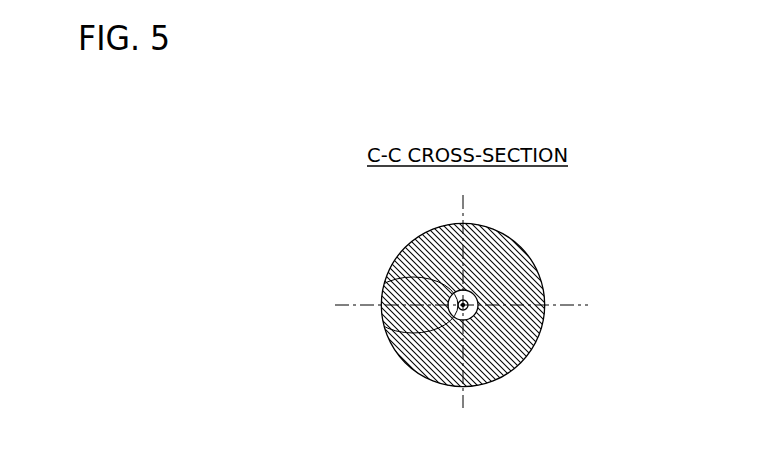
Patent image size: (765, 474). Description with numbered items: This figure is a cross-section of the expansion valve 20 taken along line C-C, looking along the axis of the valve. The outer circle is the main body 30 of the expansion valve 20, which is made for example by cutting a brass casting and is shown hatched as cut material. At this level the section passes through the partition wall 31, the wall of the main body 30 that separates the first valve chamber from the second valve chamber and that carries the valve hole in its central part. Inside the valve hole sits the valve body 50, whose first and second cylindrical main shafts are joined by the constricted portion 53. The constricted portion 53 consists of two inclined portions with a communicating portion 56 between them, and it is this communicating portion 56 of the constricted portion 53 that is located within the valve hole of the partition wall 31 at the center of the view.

The expansion valve 20 is at (463, 301).
The main body 30 is at (512, 252).
The partition wall 31 is at (535, 272).
The valve body 50 is at (386, 283).
The constricted portion 53 is at (447, 303).
The communicating portion 56 is at (383, 323).